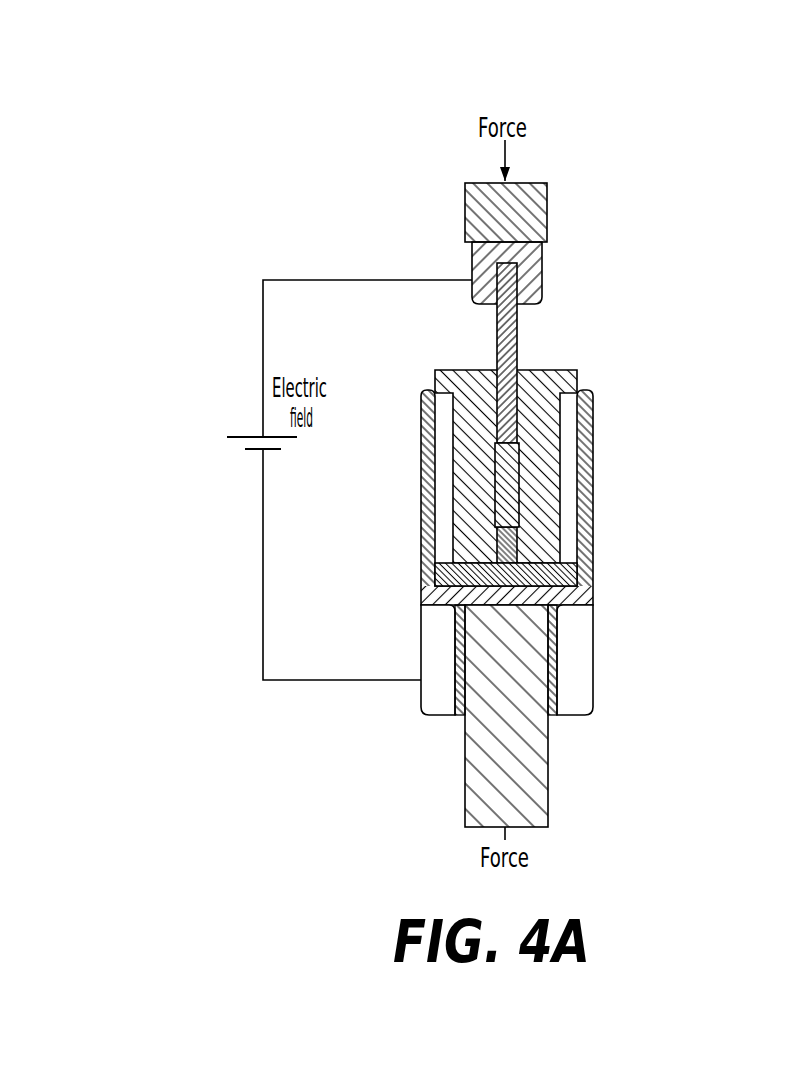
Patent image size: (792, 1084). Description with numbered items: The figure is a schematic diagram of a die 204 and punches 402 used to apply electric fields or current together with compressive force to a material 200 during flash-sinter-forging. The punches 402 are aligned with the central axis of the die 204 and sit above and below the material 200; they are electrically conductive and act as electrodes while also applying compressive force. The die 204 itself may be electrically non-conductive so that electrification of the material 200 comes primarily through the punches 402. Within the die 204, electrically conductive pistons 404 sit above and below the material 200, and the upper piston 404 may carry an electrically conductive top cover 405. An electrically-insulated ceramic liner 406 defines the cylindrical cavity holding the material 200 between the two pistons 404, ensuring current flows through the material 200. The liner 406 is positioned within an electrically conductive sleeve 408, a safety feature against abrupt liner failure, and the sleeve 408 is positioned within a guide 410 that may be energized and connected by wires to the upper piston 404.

The die 204 is at (703, 109).
The material 200 is at (524, 509).
The punches 402 is at (550, 199).
The pistons 404 is at (521, 341).
The top cover 405 is at (545, 272).
The electrically-insulated liner 406 is at (574, 367).
The sleeve 408 is at (580, 421).
The guide 410 is at (595, 480).